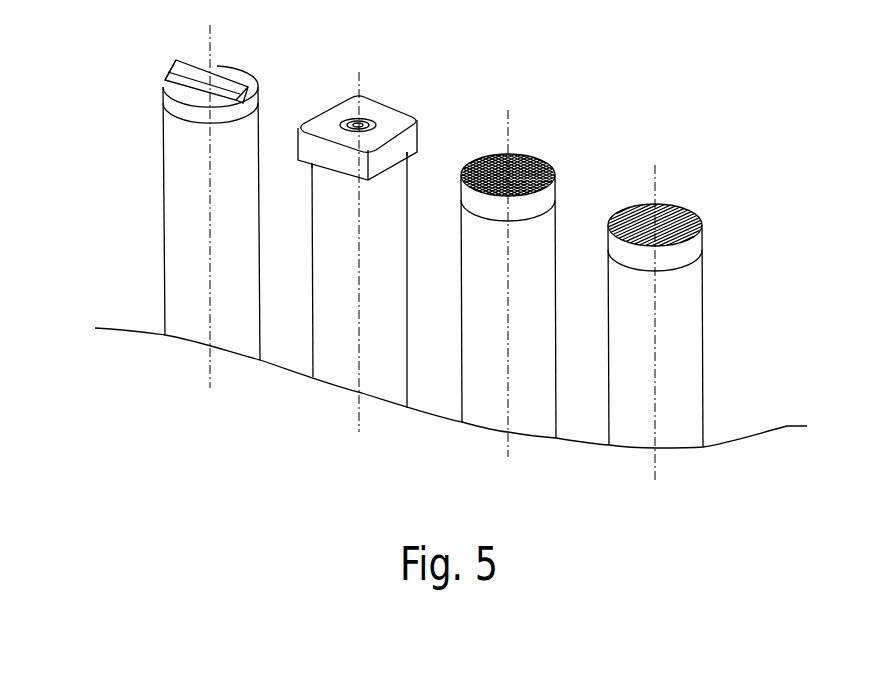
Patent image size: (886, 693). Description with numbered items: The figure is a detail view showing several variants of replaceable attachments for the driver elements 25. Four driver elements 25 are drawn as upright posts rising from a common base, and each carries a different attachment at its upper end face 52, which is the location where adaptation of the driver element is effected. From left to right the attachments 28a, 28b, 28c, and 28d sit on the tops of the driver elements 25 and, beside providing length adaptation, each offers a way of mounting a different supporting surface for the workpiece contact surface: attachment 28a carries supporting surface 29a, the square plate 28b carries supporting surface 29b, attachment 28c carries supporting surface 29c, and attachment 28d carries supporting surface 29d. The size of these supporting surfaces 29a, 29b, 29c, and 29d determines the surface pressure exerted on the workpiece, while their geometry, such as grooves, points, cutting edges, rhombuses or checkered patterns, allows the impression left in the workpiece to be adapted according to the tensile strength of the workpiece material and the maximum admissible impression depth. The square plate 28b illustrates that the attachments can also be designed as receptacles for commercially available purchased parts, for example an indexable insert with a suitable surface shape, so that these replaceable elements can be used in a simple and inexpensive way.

The driver element 25 is at (182, 205).
The attachment 28a is at (247, 95).
The supporting surface 29a is at (218, 70).
The square plate 28b is at (403, 137).
The supporting surface 29b is at (377, 112).
The attachment 28c is at (538, 199).
The supporting surface 29c is at (543, 160).
The attachment 28d is at (683, 250).
The supporting surface 29d is at (665, 210).
The upper end face 52 is at (125, 108).